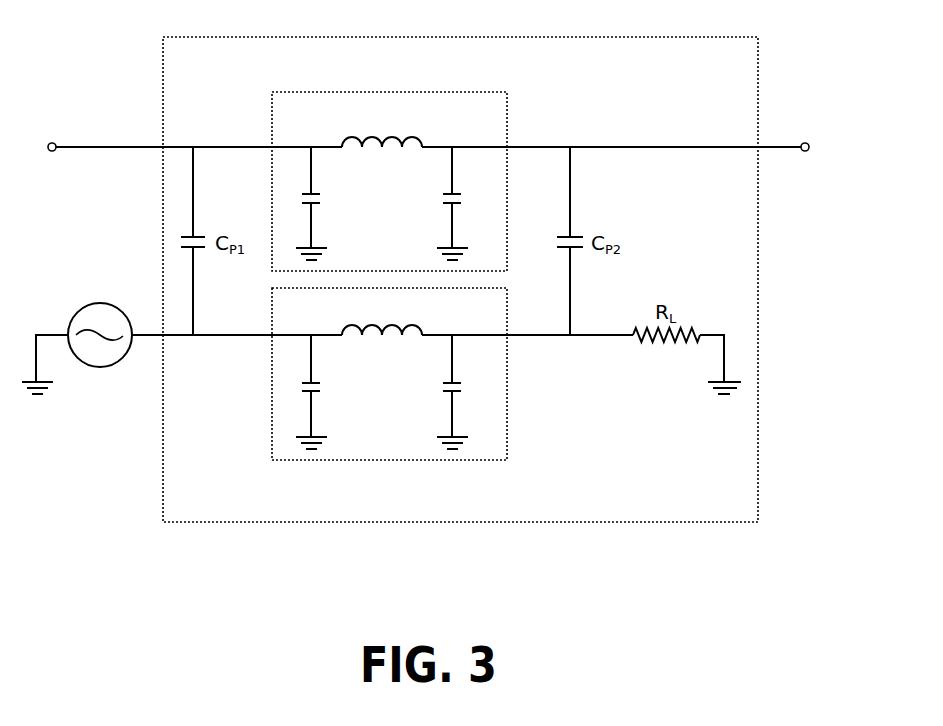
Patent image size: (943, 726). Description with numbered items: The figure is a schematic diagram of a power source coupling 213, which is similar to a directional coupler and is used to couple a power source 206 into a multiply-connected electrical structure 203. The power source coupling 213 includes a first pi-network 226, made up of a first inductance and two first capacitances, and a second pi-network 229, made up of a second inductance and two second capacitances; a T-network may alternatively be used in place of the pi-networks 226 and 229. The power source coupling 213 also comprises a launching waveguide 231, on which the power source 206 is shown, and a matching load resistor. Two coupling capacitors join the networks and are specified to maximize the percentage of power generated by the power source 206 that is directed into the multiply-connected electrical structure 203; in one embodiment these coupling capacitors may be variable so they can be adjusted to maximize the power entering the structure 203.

The multiply-connected electrical structure 203 is at (125, 147).
The power source 206 is at (100, 312).
The power source coupling 213 is at (603, 522).
The pi-network 226 is at (420, 92).
The pi-network 229 is at (405, 460).
The launching waveguide 231 is at (213, 335).